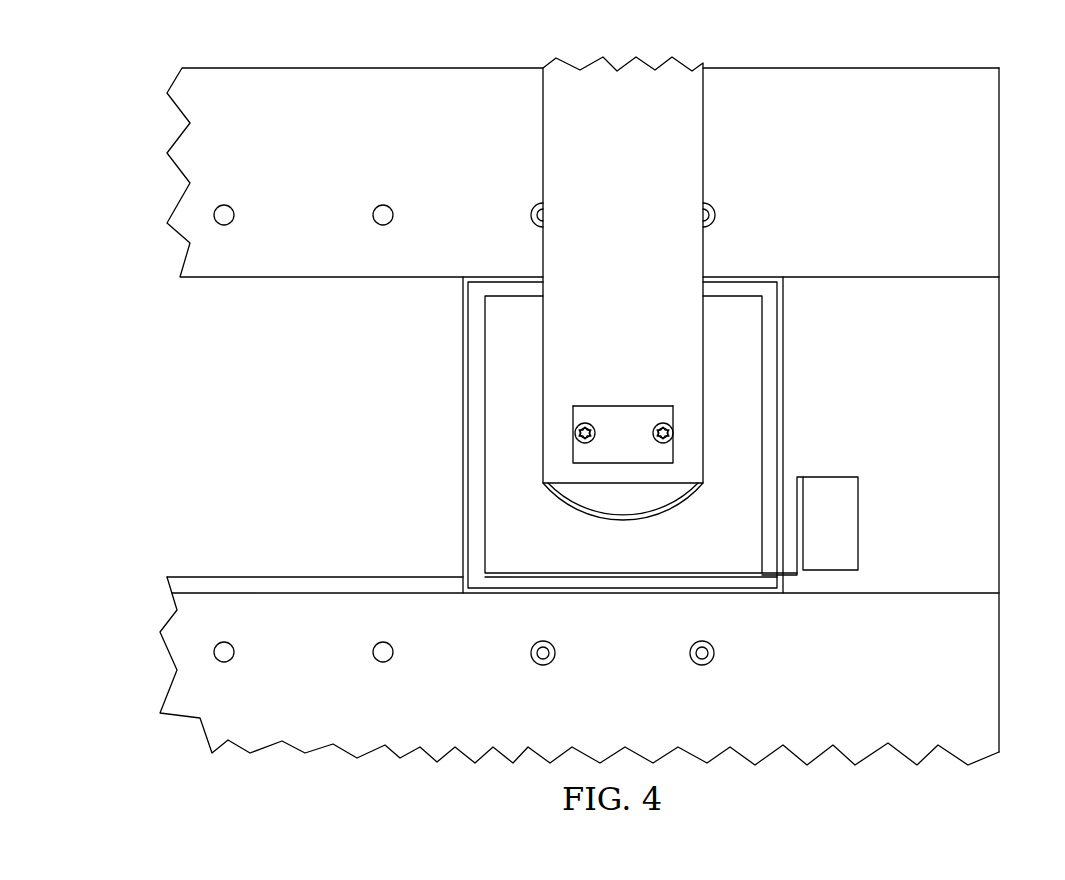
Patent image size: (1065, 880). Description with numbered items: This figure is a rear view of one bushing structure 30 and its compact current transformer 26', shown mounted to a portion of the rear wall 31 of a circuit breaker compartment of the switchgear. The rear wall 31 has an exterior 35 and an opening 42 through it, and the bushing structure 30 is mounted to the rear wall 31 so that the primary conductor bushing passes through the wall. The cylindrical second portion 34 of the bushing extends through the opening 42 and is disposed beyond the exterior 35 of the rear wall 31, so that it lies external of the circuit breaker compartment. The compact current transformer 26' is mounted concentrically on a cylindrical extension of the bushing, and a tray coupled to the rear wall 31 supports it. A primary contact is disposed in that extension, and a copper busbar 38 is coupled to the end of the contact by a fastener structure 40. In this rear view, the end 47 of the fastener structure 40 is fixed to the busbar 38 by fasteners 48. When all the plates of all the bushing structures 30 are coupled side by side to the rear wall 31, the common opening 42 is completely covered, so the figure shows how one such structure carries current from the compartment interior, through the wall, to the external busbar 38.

The compact current transformer 26' is at (610, 434).
The bushing structure 30 is at (678, 529).
The rear wall 31 is at (348, 750).
The cylindrical second portion 34 is at (622, 521).
The exterior 35 is at (999, 359).
The copper busbar 38 is at (632, 72).
The fastener structure 40 is at (573, 417).
The opening 42 is at (310, 277).
The end of fastener structure 47 is at (623, 406).
The fasteners 48 is at (584, 423).